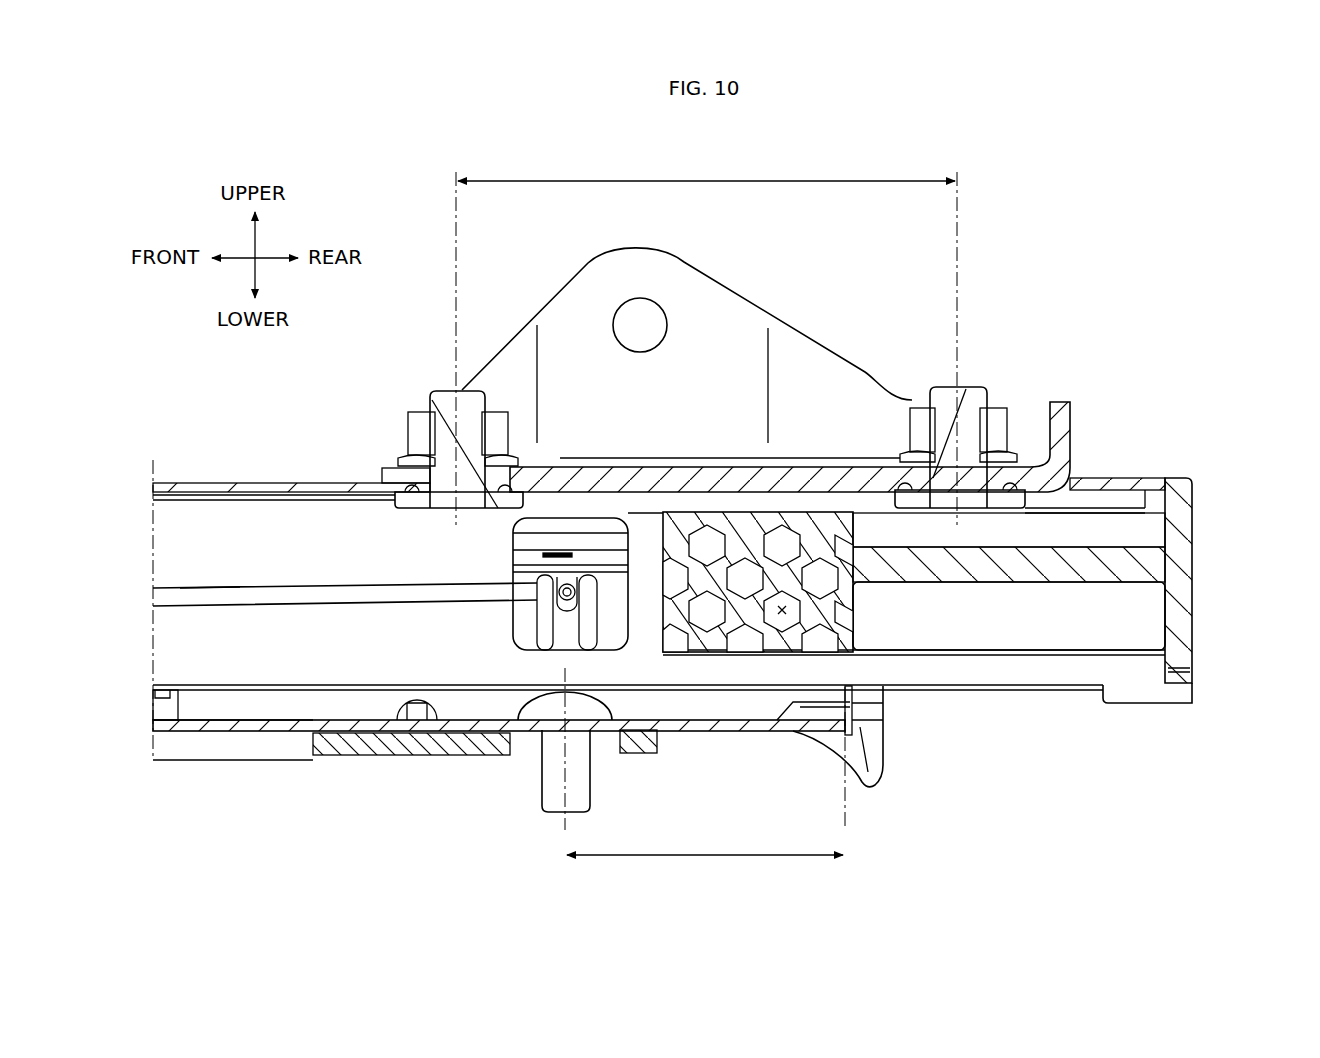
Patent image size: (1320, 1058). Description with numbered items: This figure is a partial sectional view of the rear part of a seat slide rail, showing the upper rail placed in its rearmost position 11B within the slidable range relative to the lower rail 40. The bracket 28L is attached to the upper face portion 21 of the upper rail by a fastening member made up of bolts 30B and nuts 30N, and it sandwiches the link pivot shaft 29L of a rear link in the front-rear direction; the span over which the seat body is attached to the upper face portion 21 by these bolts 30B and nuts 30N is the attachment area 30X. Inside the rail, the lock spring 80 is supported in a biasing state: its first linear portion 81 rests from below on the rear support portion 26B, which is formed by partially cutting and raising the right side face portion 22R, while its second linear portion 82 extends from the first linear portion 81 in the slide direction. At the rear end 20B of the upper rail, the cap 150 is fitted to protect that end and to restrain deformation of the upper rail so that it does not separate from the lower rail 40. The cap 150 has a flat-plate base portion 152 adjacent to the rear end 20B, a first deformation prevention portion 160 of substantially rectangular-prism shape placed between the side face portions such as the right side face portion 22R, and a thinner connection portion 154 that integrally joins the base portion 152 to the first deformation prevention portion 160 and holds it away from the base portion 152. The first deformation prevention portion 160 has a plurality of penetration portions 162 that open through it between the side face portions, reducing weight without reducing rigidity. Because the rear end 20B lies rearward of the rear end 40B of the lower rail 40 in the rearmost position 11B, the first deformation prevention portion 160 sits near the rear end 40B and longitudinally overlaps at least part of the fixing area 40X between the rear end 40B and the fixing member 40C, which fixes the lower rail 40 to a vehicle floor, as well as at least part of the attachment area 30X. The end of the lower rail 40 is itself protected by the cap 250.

The attachment area 30X is at (706, 169).
The fixing area 40X is at (705, 842).
The bracket 28L is at (735, 312).
The link pivot shaft 29L is at (633, 308).
The bolt 30B is at (447, 400).
The nut 30N is at (418, 423).
The upper face portion 21 is at (232, 492).
The rear end 20B is at (1173, 482).
The cap 150 is at (1180, 474).
The base portion 152 is at (1183, 558).
The connection portion 154 is at (1032, 620).
The rearmost position 11B is at (1126, 422).
The first deformation prevention portion 160 is at (718, 645).
The penetration portion 162 is at (782, 610).
The rear support portion 26B is at (553, 625).
The first linear portion 81 is at (568, 597).
The lock spring 80 is at (265, 576).
The second linear portion 82 is at (210, 585).
The right side face portion 22R is at (238, 655).
The lower rail 40 is at (733, 727).
The fixing member 40C is at (552, 772).
The rear end 40B is at (883, 703).
The cap 250 is at (887, 748).